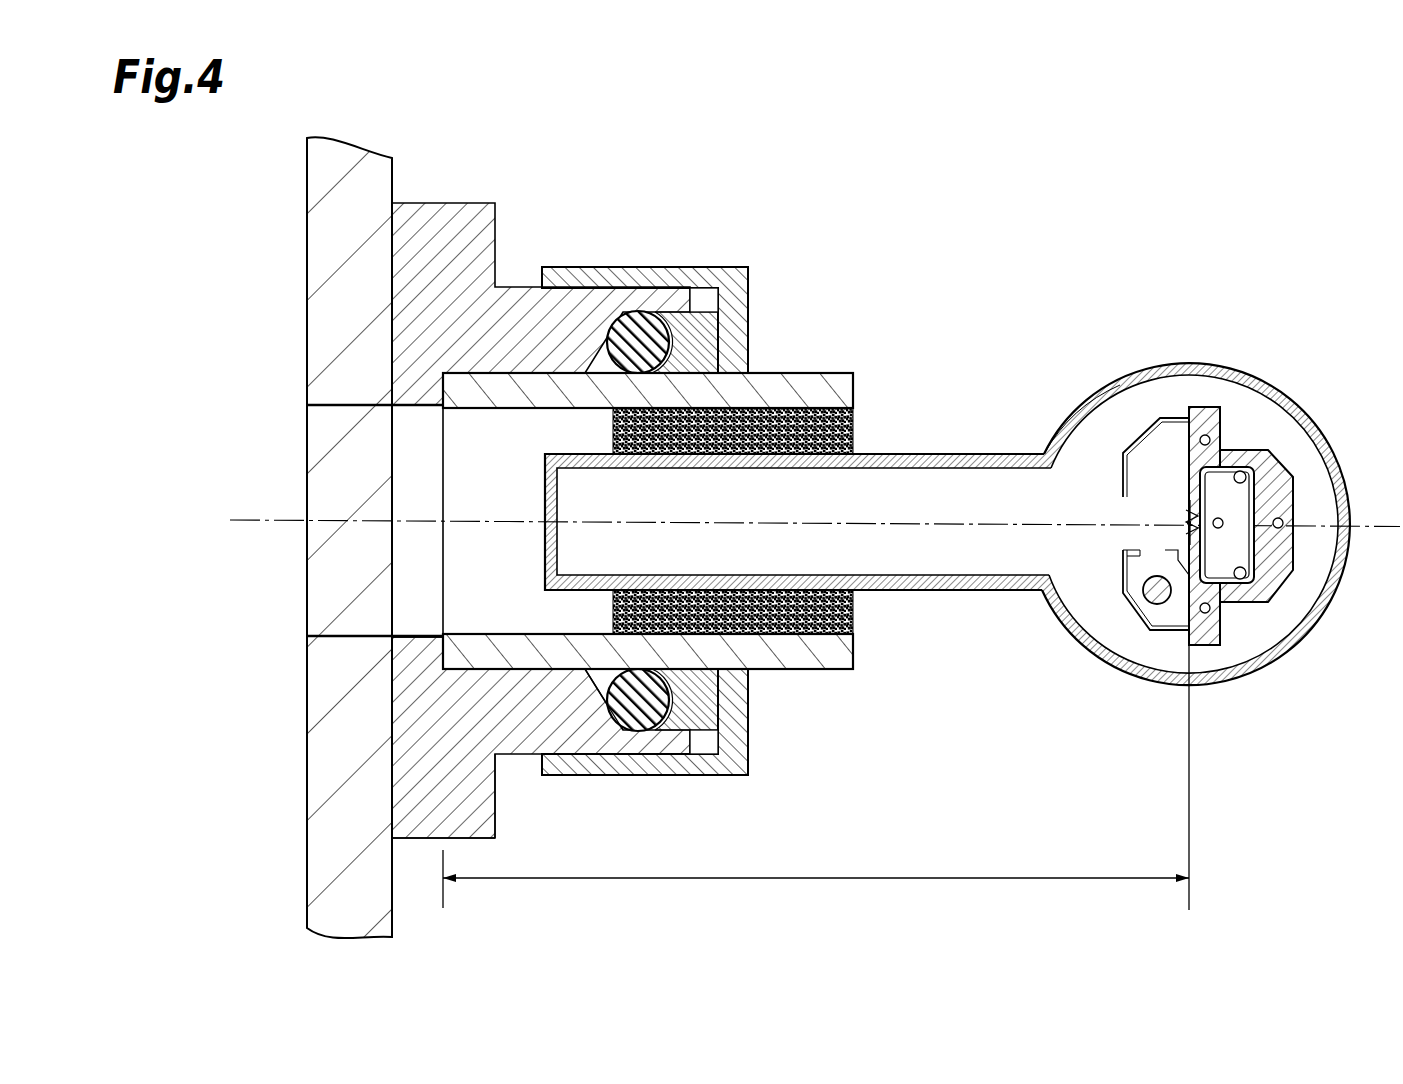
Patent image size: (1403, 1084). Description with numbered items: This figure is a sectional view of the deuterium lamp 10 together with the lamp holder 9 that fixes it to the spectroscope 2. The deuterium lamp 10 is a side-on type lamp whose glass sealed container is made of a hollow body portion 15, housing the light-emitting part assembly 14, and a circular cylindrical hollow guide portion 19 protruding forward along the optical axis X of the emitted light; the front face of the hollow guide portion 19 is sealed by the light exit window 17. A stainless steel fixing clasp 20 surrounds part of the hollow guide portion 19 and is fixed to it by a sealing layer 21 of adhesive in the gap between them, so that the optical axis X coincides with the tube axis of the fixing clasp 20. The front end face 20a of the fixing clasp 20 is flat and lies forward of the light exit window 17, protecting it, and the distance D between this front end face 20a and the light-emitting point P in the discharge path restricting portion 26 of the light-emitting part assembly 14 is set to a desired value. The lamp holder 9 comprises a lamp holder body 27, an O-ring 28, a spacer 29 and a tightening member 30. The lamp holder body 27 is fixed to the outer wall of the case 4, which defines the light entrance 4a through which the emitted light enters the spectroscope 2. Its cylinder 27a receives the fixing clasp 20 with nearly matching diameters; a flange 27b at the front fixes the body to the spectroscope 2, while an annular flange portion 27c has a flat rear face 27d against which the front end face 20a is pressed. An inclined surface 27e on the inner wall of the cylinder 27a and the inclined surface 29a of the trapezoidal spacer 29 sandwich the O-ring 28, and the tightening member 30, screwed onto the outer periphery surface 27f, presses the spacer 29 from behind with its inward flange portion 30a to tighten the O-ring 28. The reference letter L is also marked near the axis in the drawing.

The spectroscope 2 is at (250, 188).
The case 4 is at (316, 273).
The light entrance 4a is at (310, 408).
The lamp holder 9 is at (499, 182).
The deuterium lamp 10 is at (938, 318).
The light-emitting part assembly 14 is at (1250, 640).
The hollow body portion 15 is at (1200, 366).
The light exit window 17 is at (547, 492).
The hollow guide portion 19 is at (1023, 453).
The fixing clasp 20 is at (832, 386).
The front end face 20a is at (440, 476).
The sealing layer 21 is at (858, 432).
The discharge path restricting portion 26 is at (1190, 518).
The lamp holder body 27 is at (517, 274).
The cylinder 27a is at (520, 742).
The flange 27b is at (418, 817).
The flange portion 27c is at (413, 650).
The rear face 27d is at (452, 632).
The inclined surface 27e is at (607, 712).
The outer periphery surface 27f is at (671, 288).
The O-ring 28 is at (640, 725).
The spacer 29 is at (720, 692).
The inclined surface 29a is at (712, 745).
The tightening member 30 is at (750, 752).
The flange portion 30a is at (760, 690).
The light-emitting point P is at (1185, 523).
The axis L is at (523, 522).
The optical axis X is at (944, 530).
The distance D is at (830, 879).